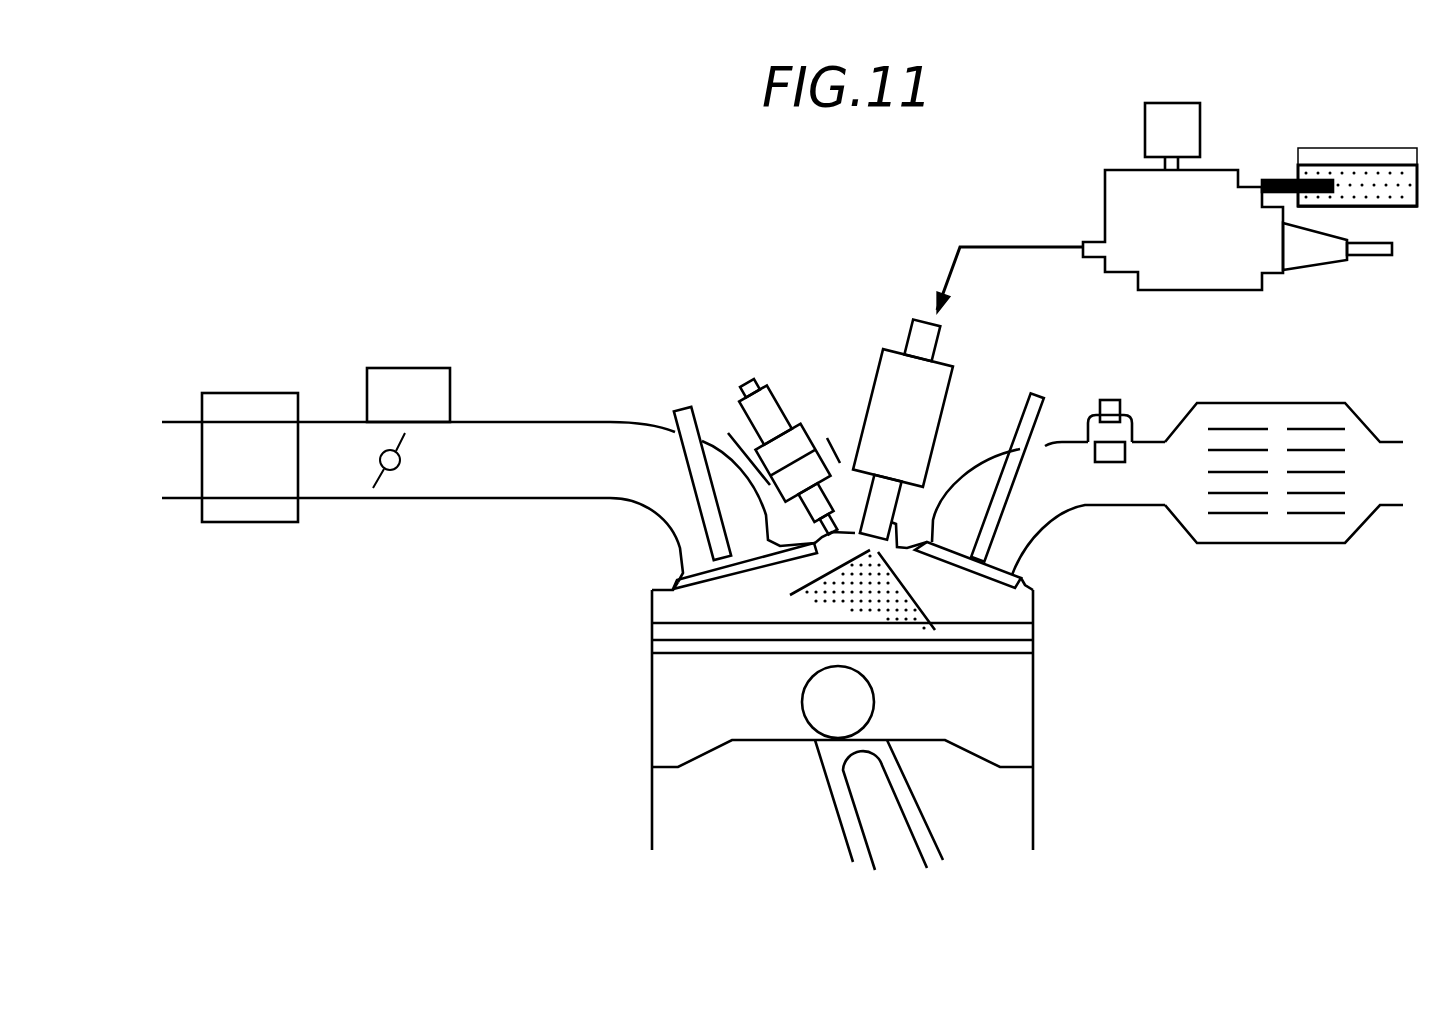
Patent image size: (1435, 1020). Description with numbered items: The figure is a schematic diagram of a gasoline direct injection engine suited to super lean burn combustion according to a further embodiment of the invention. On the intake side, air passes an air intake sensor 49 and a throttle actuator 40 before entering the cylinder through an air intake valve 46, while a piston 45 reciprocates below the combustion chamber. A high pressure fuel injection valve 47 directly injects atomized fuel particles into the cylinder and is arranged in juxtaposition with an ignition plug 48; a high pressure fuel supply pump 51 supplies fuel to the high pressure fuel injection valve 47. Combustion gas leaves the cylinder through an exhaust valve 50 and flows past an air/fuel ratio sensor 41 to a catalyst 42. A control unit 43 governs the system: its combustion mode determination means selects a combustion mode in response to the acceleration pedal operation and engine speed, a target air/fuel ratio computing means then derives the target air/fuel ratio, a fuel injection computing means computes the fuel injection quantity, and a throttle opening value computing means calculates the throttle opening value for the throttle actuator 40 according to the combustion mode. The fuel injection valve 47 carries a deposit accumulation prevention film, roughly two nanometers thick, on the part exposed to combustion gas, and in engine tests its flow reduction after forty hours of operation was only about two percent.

The throttle actuator 40 is at (440, 400).
The air/fuel ratio sensor 41 is at (1108, 453).
The catalyst 42 is at (1328, 397).
The control unit 43 is at (1190, 127).
The piston 45 is at (1017, 712).
The air intake valve 46 is at (683, 415).
The high pressure fuel injection valve 47 is at (917, 370).
The ignition plug 48 is at (772, 392).
The air intake sensor 49 is at (247, 402).
The exhaust valve 50 is at (1048, 393).
The high pressure fuel supply pump 51 is at (1203, 273).